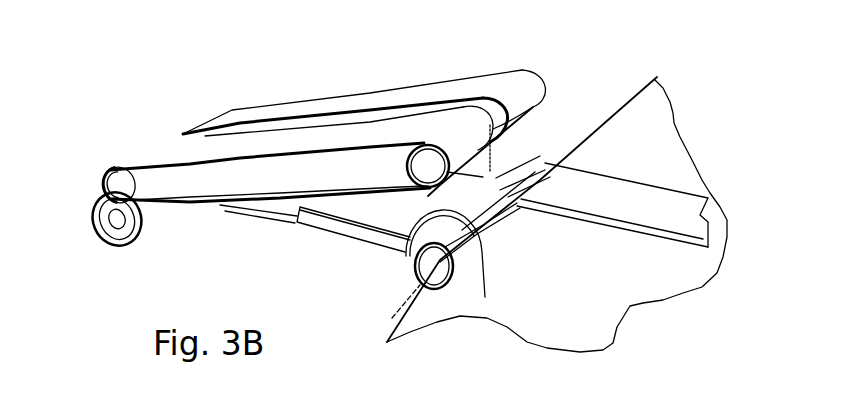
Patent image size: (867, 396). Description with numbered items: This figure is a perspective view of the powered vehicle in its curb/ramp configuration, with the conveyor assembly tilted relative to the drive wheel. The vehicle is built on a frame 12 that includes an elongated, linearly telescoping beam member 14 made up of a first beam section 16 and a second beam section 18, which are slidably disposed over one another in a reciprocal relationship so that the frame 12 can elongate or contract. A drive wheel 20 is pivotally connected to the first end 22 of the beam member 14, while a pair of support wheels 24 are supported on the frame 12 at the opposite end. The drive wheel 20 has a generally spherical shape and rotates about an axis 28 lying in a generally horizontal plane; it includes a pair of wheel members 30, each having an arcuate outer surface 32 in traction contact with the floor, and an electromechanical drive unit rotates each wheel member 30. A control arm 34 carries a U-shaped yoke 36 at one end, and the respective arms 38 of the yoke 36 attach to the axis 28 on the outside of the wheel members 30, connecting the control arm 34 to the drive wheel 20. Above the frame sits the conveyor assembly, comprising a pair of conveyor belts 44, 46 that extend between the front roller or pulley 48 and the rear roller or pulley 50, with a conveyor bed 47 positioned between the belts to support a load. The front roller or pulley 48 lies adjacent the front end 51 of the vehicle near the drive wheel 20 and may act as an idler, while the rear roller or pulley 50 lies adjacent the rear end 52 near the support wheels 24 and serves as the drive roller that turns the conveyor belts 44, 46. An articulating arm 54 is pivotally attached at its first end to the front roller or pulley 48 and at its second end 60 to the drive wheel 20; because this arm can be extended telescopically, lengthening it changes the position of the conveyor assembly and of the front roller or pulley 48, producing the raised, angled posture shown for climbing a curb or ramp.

The frame 12 is at (277, 230).
The beam member 14 is at (327, 232).
The first beam section 16 is at (365, 227).
The second beam section 18 is at (286, 206).
The drive wheel 20 is at (398, 248).
The first end 22 is at (405, 240).
The support wheels 24 is at (107, 245).
The axis 28 is at (524, 167).
The wheel members 30 is at (467, 207).
The arcuate outer surface 32 is at (450, 203).
The control arm 34 is at (598, 213).
The yoke 36 is at (584, 165).
The arms 38 is at (485, 297).
The conveyor belt 44 is at (270, 107).
The conveyor belt 46 is at (155, 150).
The conveyor bed 47 is at (180, 190).
The front roller or pulley 48 is at (417, 170).
The rear roller or pulley 50 is at (113, 173).
The front end 51 is at (457, 150).
The rear end 52 is at (133, 168).
The articulating arm 54 is at (513, 193).
The second end 60 is at (500, 128).